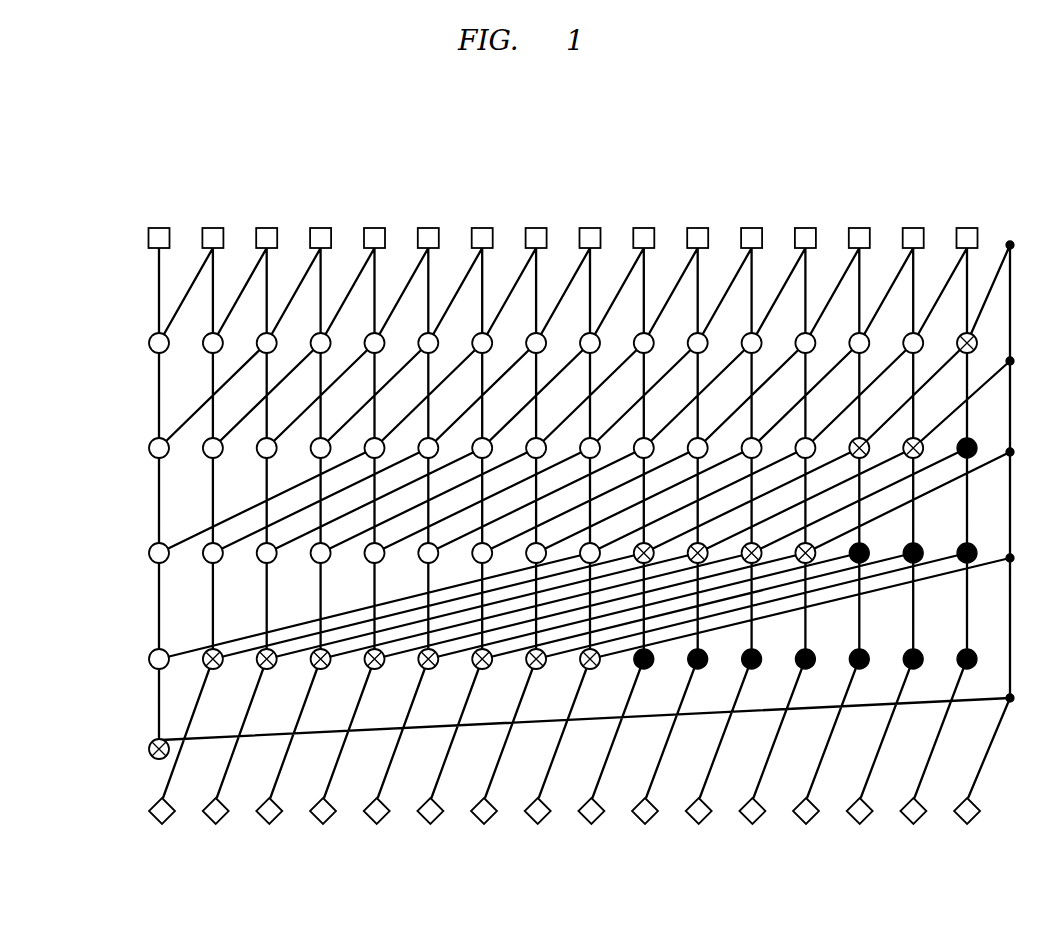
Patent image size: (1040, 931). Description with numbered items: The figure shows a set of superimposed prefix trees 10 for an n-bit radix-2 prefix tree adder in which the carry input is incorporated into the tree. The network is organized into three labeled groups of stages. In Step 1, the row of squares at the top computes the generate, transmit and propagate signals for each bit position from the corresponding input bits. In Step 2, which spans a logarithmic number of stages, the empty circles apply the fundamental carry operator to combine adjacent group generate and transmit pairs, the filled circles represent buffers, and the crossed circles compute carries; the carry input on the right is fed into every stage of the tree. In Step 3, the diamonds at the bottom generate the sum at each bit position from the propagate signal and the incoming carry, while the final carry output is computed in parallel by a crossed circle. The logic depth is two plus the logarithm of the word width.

The set of superimposed prefix trees 10 is at (138, 137).
The Step 1 is at (104, 193).
The Step 2 is at (104, 305).
The Step 3 is at (104, 705).